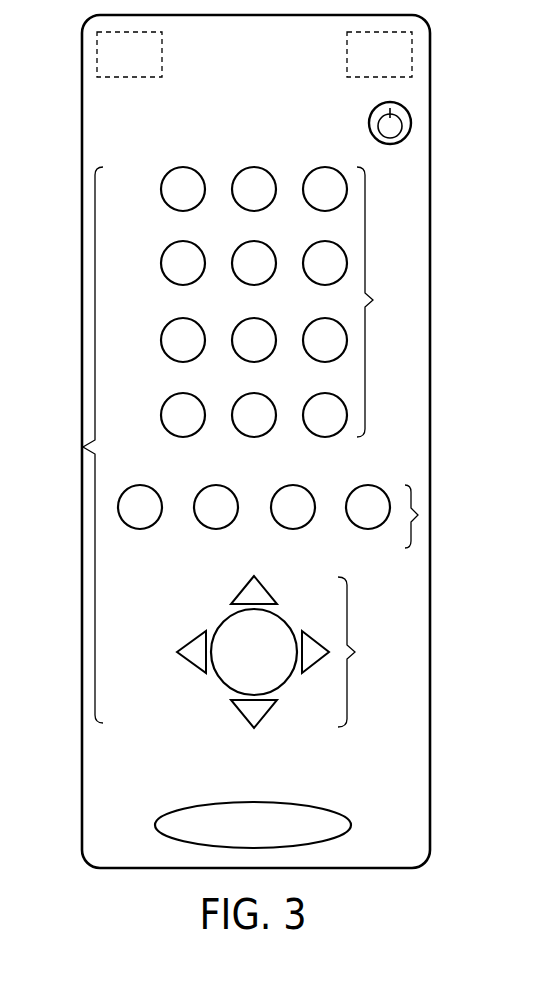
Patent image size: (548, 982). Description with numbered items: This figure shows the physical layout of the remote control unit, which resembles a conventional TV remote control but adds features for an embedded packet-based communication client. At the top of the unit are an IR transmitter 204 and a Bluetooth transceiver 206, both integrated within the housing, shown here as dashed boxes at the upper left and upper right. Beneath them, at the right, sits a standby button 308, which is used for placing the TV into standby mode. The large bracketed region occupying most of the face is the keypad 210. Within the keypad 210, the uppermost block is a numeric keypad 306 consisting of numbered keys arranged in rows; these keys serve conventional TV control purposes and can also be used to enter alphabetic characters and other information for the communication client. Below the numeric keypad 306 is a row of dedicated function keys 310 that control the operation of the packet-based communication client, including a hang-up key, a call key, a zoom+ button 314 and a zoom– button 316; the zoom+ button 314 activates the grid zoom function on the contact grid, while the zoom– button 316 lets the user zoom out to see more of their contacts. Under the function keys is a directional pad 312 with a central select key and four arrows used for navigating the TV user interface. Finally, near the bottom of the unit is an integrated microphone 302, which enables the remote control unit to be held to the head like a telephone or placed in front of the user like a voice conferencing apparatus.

The IR transmitter 204 is at (412, 45).
The Bluetooth transceiver 206 is at (97, 45).
The keypad 210 is at (83, 447).
The microphone 302 is at (252, 802).
The numeric keypad 306 is at (282, 302).
The standby button 308 is at (411, 124).
The dedicated function keys 310 is at (296, 493).
The directional pad 312 is at (284, 652).
The zoom+ button 314 is at (292, 485).
The zoom– button 316 is at (376, 487).